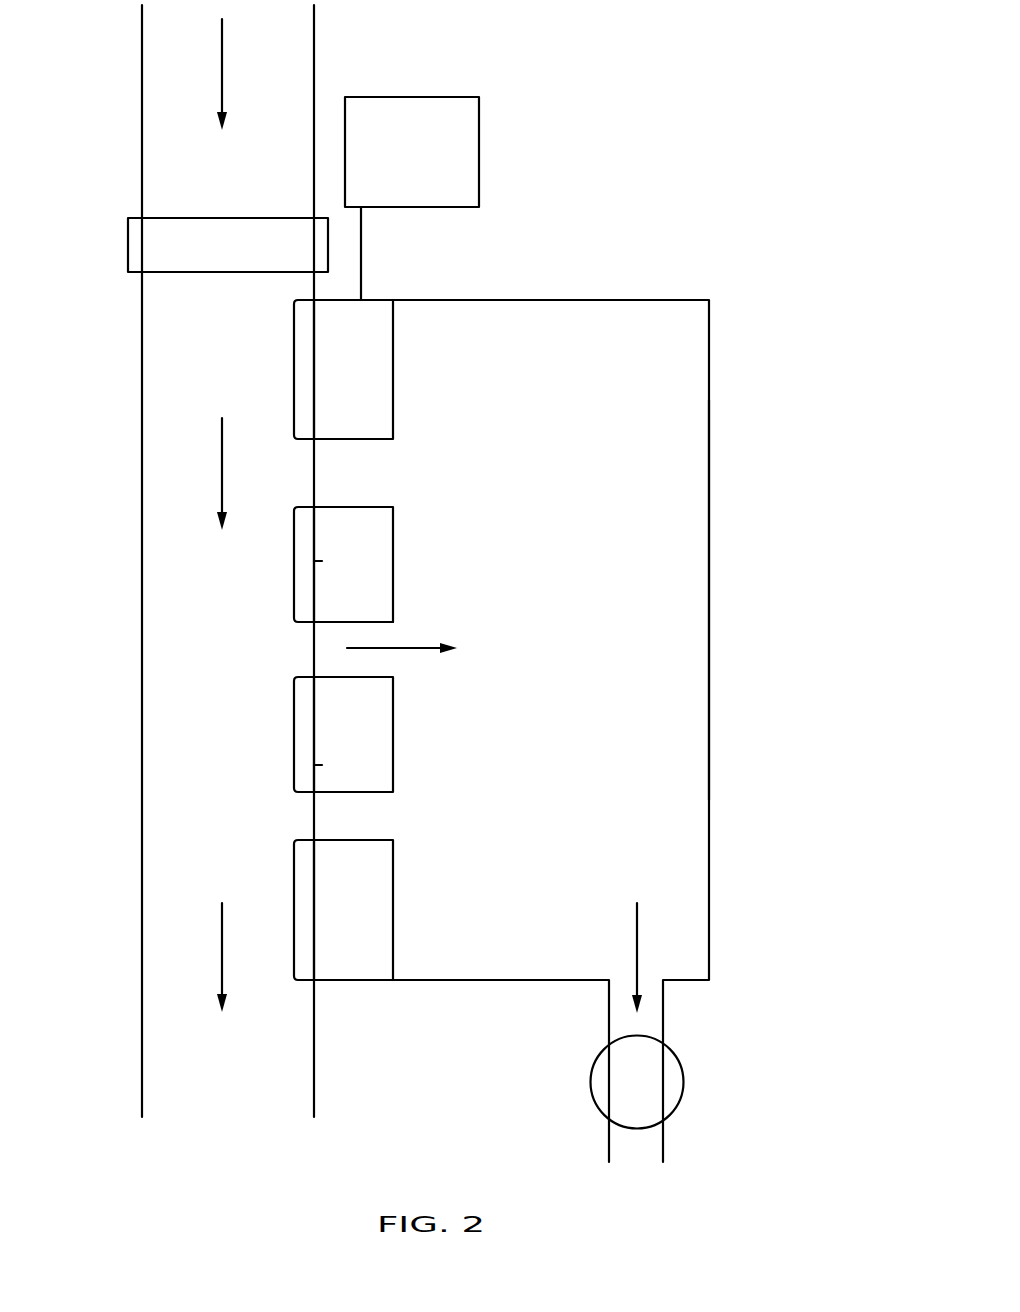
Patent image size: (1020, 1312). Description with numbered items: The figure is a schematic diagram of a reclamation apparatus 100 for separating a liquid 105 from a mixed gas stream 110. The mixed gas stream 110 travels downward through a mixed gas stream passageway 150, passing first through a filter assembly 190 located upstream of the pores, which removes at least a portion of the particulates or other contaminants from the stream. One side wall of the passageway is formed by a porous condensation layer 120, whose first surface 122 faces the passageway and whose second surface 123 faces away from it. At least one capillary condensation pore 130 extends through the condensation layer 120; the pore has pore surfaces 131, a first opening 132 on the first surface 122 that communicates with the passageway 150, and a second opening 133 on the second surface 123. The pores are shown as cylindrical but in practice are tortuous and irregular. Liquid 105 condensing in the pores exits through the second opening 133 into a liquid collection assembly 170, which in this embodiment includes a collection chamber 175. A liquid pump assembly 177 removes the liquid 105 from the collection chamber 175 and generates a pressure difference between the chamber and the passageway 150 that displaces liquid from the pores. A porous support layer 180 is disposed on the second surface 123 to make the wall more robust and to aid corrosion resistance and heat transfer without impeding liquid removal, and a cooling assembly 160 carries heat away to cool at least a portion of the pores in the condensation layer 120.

The apparatus 100 is at (674, 58).
The liquid 105 is at (416, 648).
The mixed gas stream 110 is at (221, 52).
The porous condensation layer 120 is at (294, 333).
The first surface 122 is at (294, 735).
The second surface 123 is at (315, 561).
The capillary condensation pore 130 is at (390, 476).
The pore surfaces 131 is at (338, 622).
The first opening 132 is at (284, 822).
The second opening 133 is at (392, 821).
The mixed gas stream passageway 150 is at (168, 152).
The cooling assembly 160 is at (480, 160).
The liquid collection assembly 170 is at (663, 286).
The collection chamber 175 is at (640, 594).
The liquid pump assembly 177 is at (684, 1083).
The porous support layer 180 is at (394, 367).
The filter assembly 190 is at (222, 218).